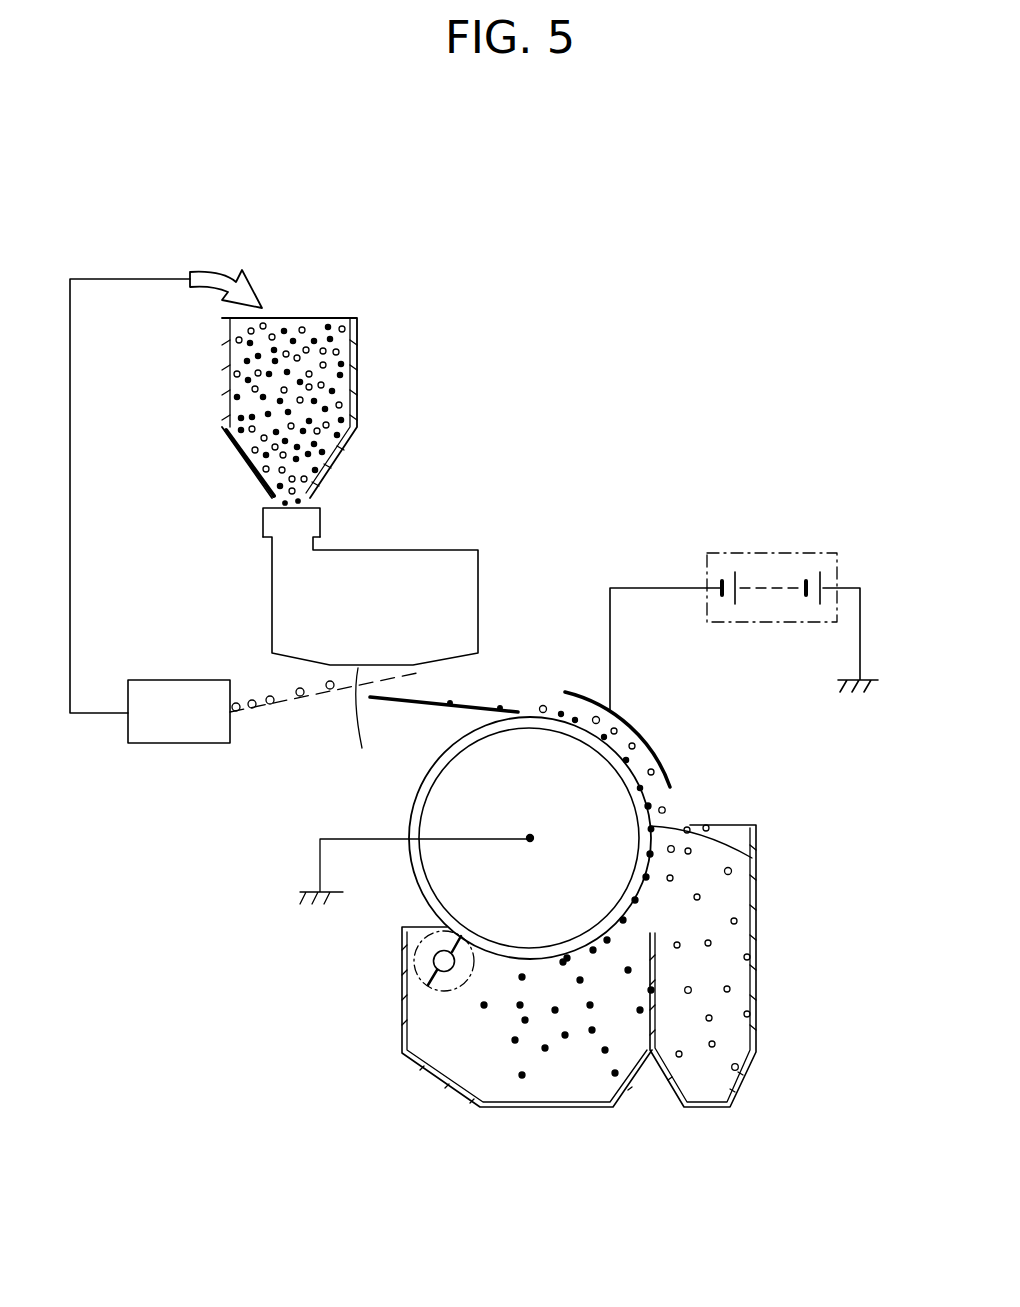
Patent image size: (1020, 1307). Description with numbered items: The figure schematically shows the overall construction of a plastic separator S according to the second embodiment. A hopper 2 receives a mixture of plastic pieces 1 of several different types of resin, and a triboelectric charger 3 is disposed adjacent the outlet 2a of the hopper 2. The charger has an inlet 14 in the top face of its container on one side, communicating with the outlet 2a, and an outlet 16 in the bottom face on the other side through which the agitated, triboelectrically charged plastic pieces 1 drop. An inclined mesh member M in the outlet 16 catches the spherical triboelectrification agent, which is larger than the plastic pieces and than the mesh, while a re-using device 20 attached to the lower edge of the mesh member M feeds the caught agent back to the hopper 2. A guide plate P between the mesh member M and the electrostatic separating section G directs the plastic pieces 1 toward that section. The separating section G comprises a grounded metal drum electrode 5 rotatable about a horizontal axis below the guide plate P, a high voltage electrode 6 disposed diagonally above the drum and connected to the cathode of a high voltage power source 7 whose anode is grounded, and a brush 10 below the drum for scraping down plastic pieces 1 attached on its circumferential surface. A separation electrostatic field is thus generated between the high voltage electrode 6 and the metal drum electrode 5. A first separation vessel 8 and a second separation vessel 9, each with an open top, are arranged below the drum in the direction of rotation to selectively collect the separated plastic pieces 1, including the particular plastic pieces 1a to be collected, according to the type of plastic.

The plastic pieces 1 is at (292, 328).
The particular plastic pieces 1a is at (484, 1005).
The hopper 2 is at (357, 358).
The outlet 2a is at (263, 512).
The triboelectric charger 3 is at (415, 548).
The metal drum electrode 5 is at (437, 757).
The high voltage electrode 6 is at (652, 738).
The high voltage power source 7 is at (790, 552).
The first separation vessel 8 is at (758, 985).
The second separation vessel 9 is at (418, 1070).
The brush 10 is at (434, 962).
The inlet 14 is at (308, 522).
The outlet 16 is at (350, 723).
The re-using device 20 is at (180, 745).
The inclined mesh member M is at (270, 705).
The guide plate P is at (478, 702).
The plastic separator S is at (570, 622).
The electrostatic separating section G is at (706, 792).